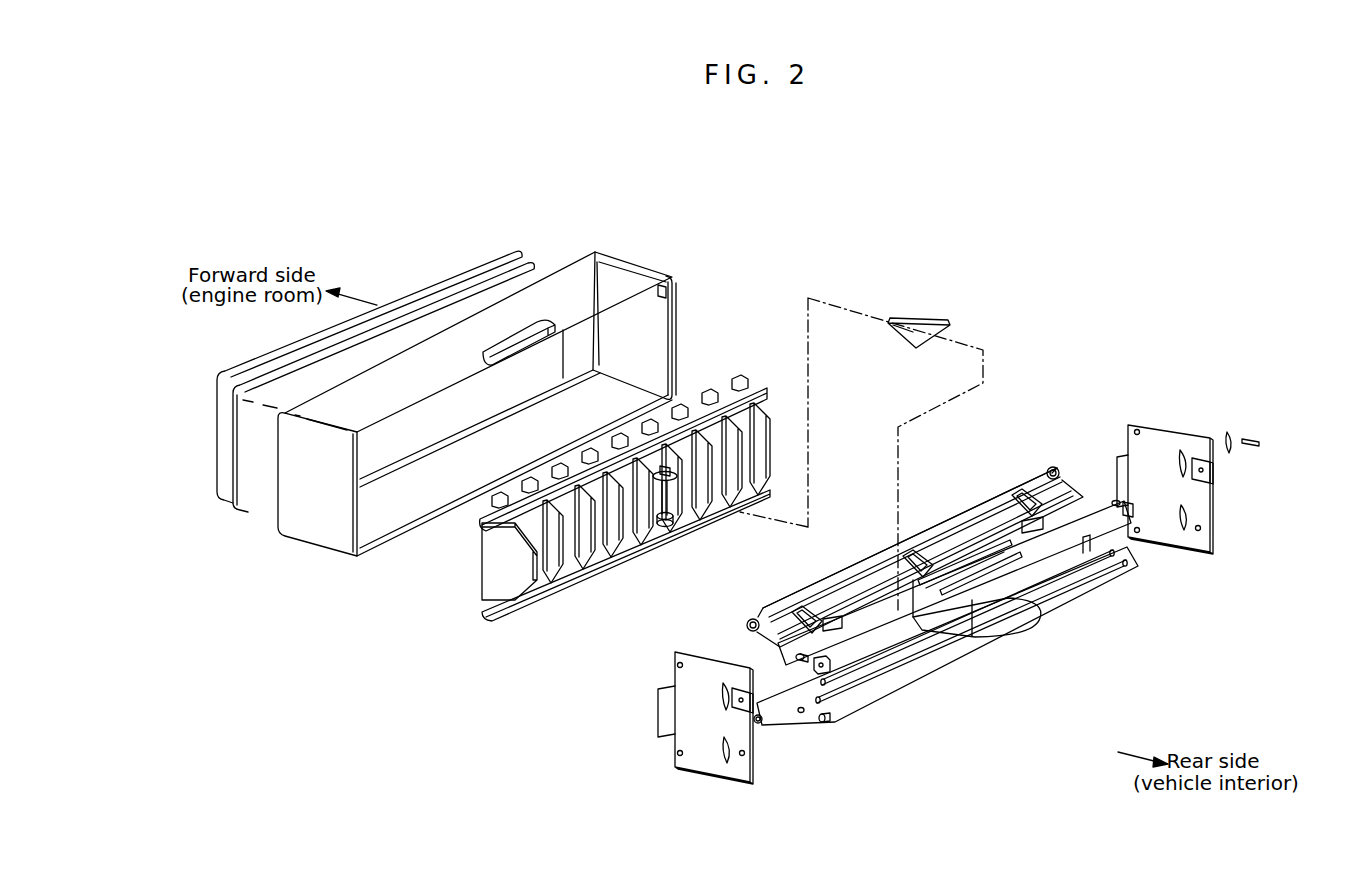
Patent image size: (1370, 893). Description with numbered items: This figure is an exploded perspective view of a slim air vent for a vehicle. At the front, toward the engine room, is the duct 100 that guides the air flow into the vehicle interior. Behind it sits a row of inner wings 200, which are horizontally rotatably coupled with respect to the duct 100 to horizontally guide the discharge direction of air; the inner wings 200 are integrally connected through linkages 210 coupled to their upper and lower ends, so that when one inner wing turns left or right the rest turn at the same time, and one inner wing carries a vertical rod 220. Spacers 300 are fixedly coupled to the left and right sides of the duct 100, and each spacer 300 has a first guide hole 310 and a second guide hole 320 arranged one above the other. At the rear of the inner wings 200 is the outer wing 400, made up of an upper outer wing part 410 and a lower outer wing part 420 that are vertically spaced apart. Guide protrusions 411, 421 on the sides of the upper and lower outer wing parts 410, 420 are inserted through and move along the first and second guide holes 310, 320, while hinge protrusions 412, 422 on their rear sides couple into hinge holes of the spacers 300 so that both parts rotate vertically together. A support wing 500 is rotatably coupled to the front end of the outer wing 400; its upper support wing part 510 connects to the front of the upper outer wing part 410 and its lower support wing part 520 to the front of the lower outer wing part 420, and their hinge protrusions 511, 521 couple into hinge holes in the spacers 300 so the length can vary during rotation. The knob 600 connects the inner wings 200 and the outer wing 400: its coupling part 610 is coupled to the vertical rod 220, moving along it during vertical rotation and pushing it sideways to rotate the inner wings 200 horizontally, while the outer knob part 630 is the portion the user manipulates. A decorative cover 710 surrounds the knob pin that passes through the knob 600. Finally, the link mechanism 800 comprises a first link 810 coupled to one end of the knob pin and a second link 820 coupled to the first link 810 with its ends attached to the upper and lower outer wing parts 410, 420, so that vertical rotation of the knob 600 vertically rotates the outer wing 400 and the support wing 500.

The duct 100 is at (416, 373).
The inner wings 200 is at (582, 499).
The linkages 210 is at (746, 392).
The vertical rod 220 is at (672, 527).
The spacers 300 is at (926, 601).
The first guide hole 310 is at (721, 697).
The second guide hole 320 is at (720, 757).
The outer wing 400 is at (927, 611).
The upper outer wing part 410 is at (1093, 507).
The guide protrusion 411 is at (797, 656).
The hinge protrusion 412 is at (826, 674).
The lower outer wing part 420 is at (937, 653).
The guide protrusion 421 is at (802, 717).
The hinge protrusion 422 is at (820, 722).
The support wing 500 is at (905, 492).
The upper support wing part 510 is at (1003, 517).
The hinge protrusions 511 is at (752, 619).
The lower support wing part 520 is at (803, 713).
The hinge protrusions 521 is at (760, 723).
The knob 600 is at (994, 645).
The coupling part 610 is at (918, 319).
The outer knob part 630 is at (1010, 627).
The decorative cover 710 is at (880, 665).
The link mechanism 800 is at (1252, 387).
The first link 810 is at (1279, 401).
The second link 820 is at (1224, 432).